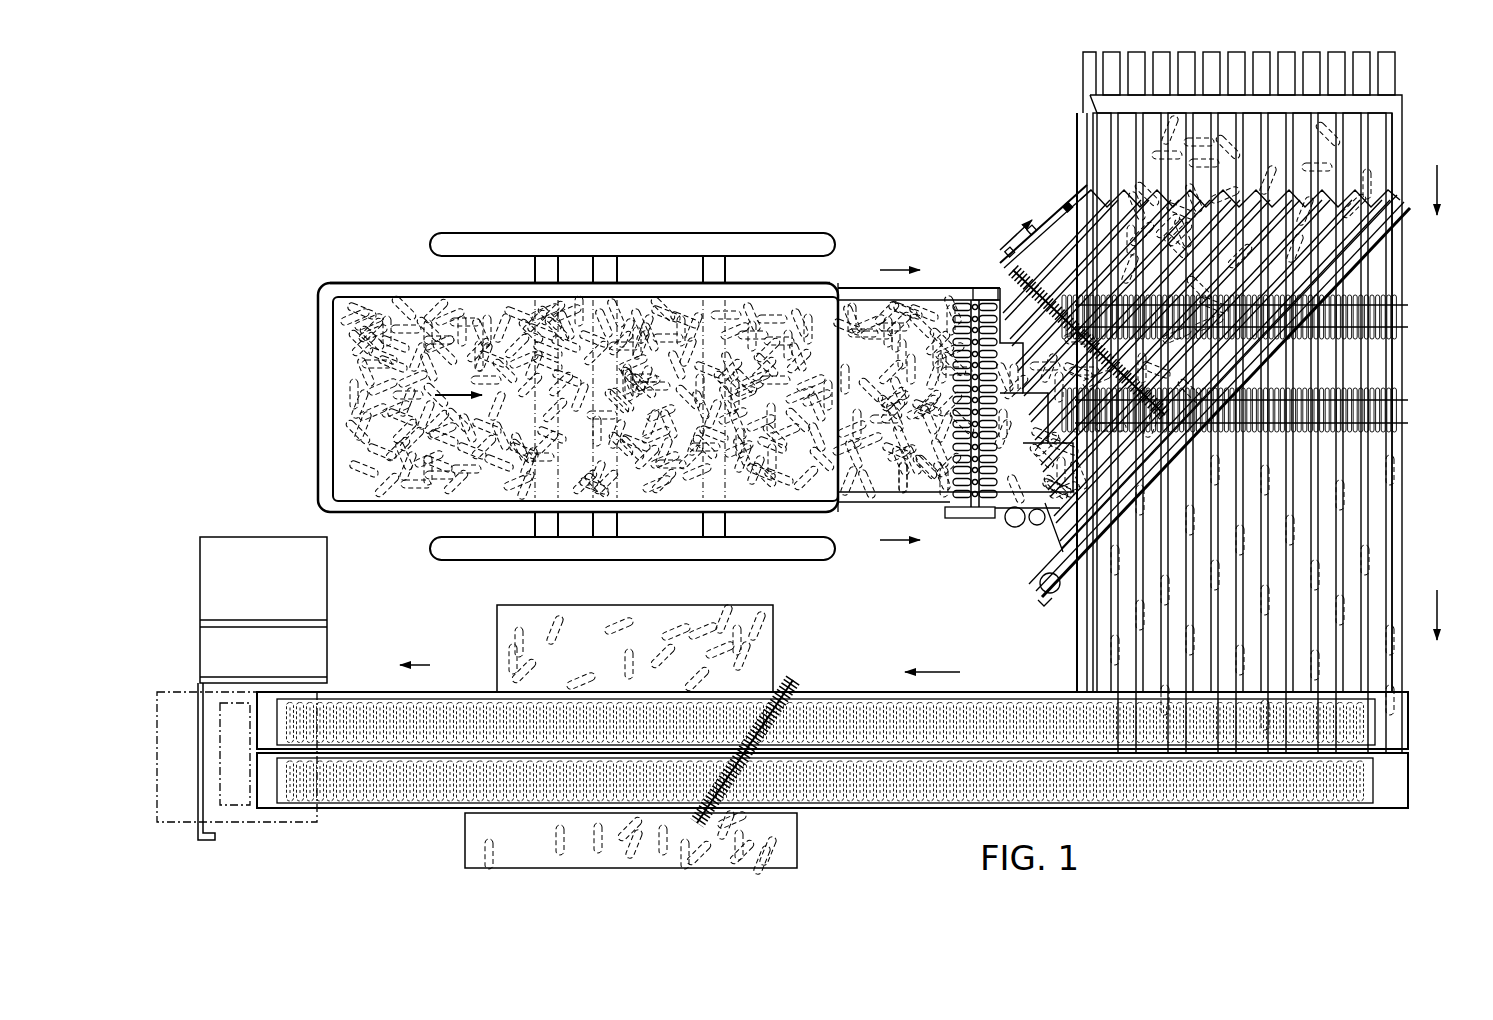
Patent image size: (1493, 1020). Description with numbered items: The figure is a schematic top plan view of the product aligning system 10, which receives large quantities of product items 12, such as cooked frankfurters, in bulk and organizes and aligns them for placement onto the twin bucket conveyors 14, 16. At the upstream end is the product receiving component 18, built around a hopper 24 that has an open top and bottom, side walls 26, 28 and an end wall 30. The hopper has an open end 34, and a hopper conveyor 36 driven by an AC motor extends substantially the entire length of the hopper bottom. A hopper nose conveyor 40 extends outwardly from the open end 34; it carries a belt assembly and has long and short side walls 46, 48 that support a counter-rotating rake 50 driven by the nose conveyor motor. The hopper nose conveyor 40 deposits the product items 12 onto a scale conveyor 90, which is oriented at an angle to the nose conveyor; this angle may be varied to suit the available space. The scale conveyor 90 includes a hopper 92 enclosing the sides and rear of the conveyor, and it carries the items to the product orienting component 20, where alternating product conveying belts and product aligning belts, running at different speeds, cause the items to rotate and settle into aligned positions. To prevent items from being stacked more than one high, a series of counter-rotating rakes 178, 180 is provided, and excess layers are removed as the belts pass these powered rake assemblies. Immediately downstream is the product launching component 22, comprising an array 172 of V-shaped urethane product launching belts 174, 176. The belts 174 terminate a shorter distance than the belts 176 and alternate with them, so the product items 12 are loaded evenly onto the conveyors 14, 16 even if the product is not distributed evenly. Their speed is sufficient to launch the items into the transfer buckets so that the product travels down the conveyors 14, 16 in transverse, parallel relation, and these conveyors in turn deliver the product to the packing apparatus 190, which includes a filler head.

The product aligning system 10 is at (841, 274).
The product items 12 is at (415, 300).
The bucket conveyor 14 is at (831, 694).
The bucket conveyor 16 is at (932, 790).
The product receiving component 18 is at (668, 232).
The product orienting component 20 is at (1089, 140).
The product launching component 22 is at (1074, 657).
The hopper 24 is at (493, 283).
The side wall 26 is at (395, 290).
The side wall 28 is at (356, 508).
The end wall 30 is at (326, 462).
The open end 34 is at (868, 288).
The hopper conveyor 36 is at (350, 343).
The hopper nose conveyor 40 is at (933, 298).
The long side wall 46 is at (845, 505).
The short side wall 48 is at (1008, 250).
The counter-rotating rake 50 is at (998, 485).
The scale conveyor 90 is at (1062, 212).
The hopper 92 is at (1042, 540).
The array of product launching belts 172 is at (1380, 507).
The product launching belt 174 is at (1355, 555).
The product launching belt 176 is at (1377, 565).
The counter-rotating rake 178 is at (1410, 305).
The counter-rotating rake 180 is at (1410, 400).
The packing apparatus 190 is at (262, 547).